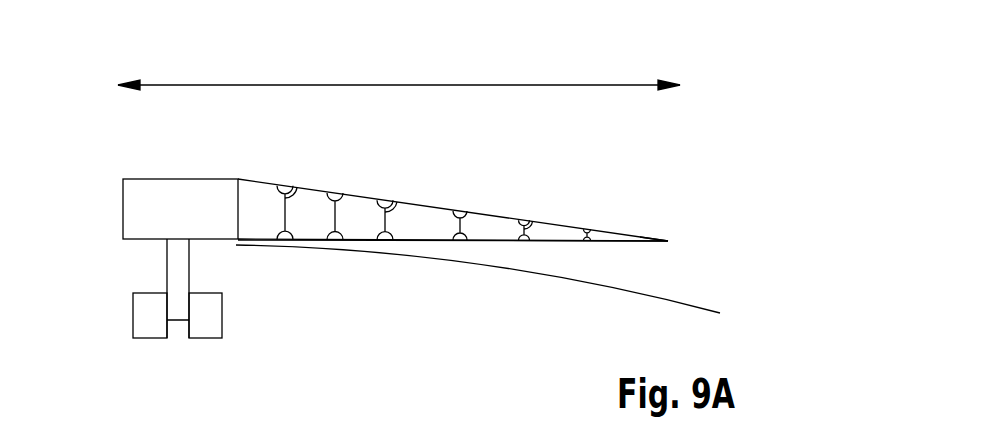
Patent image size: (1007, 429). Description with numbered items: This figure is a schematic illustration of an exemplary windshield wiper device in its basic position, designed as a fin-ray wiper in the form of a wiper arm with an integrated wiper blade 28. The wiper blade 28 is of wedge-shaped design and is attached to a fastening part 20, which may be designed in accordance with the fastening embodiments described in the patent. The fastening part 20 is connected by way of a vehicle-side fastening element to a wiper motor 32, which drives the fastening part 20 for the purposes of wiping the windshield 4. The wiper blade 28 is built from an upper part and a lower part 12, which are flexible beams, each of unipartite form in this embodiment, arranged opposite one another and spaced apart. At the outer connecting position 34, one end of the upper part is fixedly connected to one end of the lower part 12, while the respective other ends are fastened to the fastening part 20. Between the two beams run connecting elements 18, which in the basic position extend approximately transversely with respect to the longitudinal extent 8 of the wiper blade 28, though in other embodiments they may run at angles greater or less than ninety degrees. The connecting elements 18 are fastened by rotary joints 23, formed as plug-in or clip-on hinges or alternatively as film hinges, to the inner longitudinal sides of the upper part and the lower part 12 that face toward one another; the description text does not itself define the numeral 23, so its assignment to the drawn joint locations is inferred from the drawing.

The windshield 4 is at (658, 297).
The longitudinal extent 8 is at (446, 85).
The lower part 12 is at (563, 242).
The connecting elements 18 is at (298, 185).
The fastening part 20 is at (134, 211).
The cavities 23 is at (284, 184).
The wiper blade 28 is at (632, 184).
The wiper motor 32 is at (141, 318).
The outer connecting position 34 is at (668, 241).